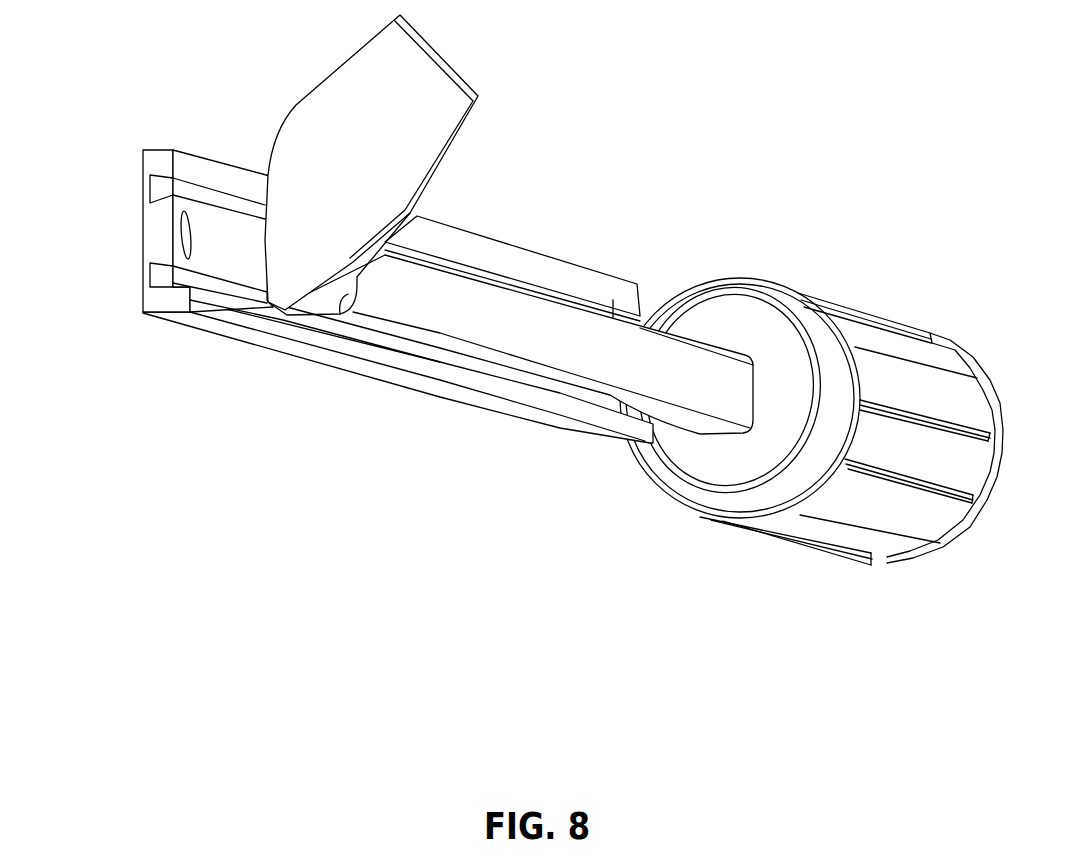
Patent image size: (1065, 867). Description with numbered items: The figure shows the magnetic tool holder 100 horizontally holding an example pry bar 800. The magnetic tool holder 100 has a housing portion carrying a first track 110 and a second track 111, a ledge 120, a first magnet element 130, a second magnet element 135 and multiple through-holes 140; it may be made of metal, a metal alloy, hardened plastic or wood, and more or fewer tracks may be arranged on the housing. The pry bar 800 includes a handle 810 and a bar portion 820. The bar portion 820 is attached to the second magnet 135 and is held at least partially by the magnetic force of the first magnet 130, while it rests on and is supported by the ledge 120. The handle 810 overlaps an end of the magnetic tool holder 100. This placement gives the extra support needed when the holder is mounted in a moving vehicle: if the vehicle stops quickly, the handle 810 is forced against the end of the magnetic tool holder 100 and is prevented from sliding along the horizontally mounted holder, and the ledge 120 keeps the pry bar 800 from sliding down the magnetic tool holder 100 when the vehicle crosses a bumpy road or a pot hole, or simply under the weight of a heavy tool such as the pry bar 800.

The magnetic tool holder 100 is at (150, 100).
The first track 110 is at (158, 190).
The second track 111 is at (153, 273).
The ledge 120 is at (203, 314).
The first magnet element 130 is at (220, 207).
The second magnet element 135 is at (230, 292).
The through-holes 140 is at (183, 233).
The pry bar 800 is at (458, 47).
The handle 810 is at (787, 315).
The bar portion 820 is at (440, 308).